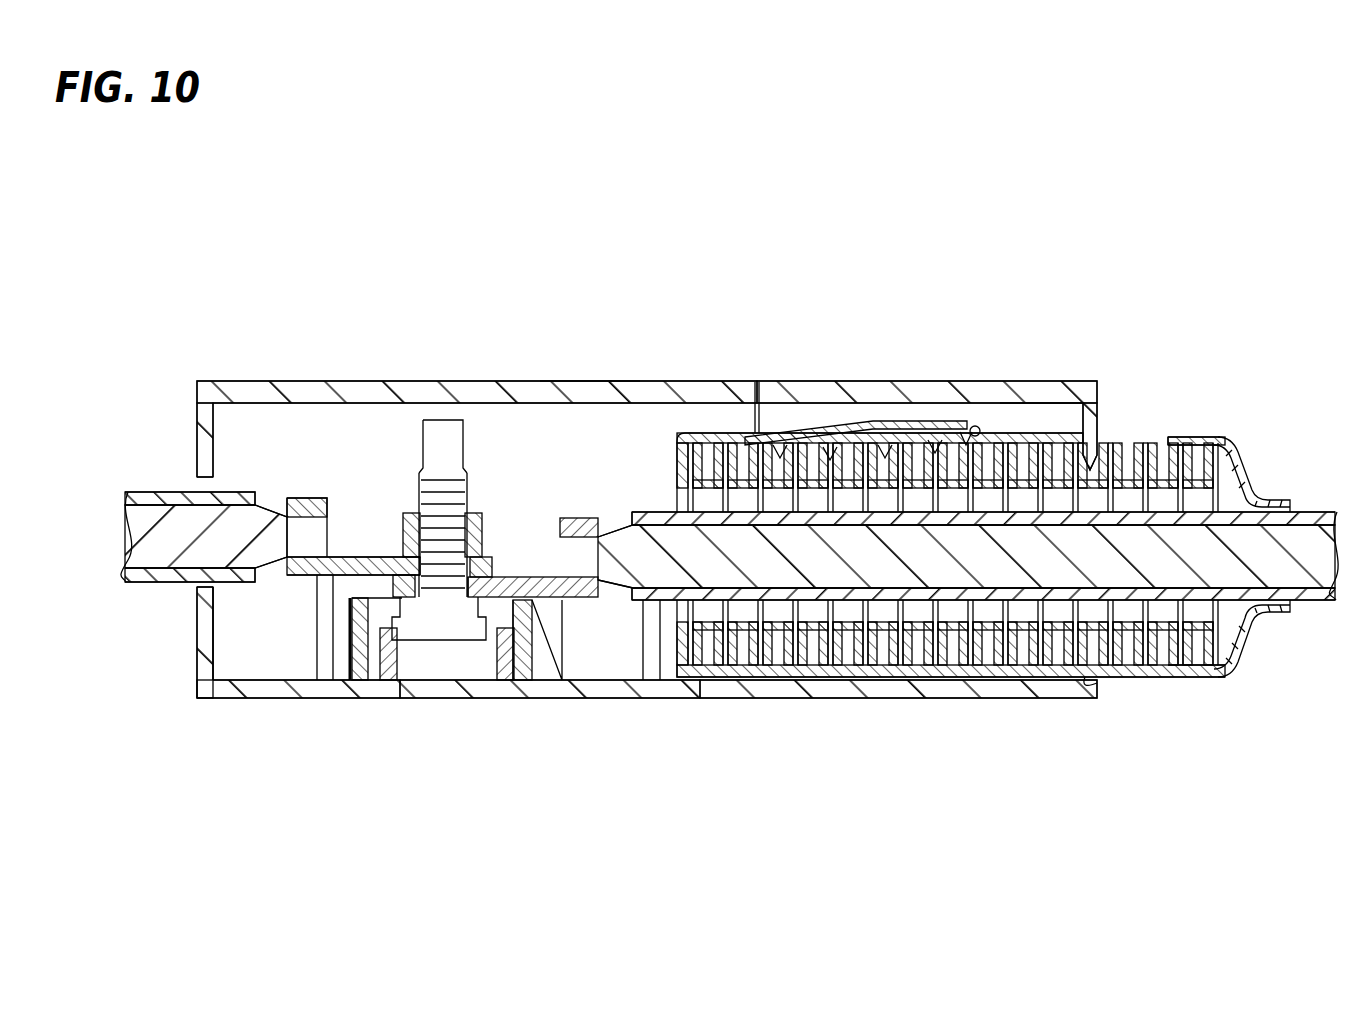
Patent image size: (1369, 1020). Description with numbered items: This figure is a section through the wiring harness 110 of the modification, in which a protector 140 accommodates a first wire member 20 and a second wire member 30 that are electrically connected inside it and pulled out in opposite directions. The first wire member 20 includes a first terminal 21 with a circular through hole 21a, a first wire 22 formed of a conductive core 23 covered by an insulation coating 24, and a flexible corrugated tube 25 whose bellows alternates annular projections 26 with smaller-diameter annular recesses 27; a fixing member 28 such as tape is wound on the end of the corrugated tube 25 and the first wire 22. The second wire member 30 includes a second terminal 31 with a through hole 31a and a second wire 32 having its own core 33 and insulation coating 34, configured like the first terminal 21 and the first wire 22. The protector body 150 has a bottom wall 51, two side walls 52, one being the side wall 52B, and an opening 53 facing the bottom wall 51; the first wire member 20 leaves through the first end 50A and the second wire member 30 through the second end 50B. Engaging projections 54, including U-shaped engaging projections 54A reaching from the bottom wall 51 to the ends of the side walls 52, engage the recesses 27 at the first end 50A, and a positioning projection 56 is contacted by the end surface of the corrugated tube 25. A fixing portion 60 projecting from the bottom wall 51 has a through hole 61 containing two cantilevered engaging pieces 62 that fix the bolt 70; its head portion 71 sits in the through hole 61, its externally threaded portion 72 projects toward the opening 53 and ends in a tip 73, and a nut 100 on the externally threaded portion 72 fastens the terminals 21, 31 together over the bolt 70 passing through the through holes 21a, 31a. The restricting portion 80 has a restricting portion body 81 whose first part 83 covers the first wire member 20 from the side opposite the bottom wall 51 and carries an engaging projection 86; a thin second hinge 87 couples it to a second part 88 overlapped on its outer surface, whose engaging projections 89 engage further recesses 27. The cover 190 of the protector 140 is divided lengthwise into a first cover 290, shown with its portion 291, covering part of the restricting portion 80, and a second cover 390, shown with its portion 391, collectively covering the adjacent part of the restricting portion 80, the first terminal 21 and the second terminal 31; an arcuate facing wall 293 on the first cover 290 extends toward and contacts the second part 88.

The connector assembly 110 is at (1172, 206).
The protector 140 is at (945, 380).
The cover 190 is at (704, 398).
The second cover 390 is at (300, 374).
The top wall of cover 391 is at (584, 380).
The first cover 290 is at (1089, 370).
The cover wall 291 is at (1040, 390).
The facing wall 293 is at (757, 415).
The restricting portion 80 is at (709, 428).
The restricting portion body 81 is at (968, 432).
The first part 83 is at (935, 440).
The engaging projection 86 is at (884, 446).
The second hinge 87 is at (980, 428).
The second part 88 is at (780, 444).
The engaging projections 89 is at (830, 447).
The corrugated tube 25 is at (1150, 440).
The annular projections 26 is at (1108, 446).
The annular recesses 27 is at (1128, 446).
The fixing member 28 is at (1242, 470).
The first wire member 20 is at (969, 590).
The first wire 22 is at (969, 620).
The core 23 is at (1280, 573).
The insulation coating 24 is at (1333, 600).
The second wire member 30 is at (193, 568).
The second wire 32 is at (182, 661).
The core 33 is at (145, 560).
The insulation coating 34 is at (178, 578).
The second terminal 31 is at (307, 498).
The through hole 31a is at (458, 560).
The bolt 70 is at (439, 587).
The head portion 71 is at (418, 640).
The externally threaded portion 72 is at (428, 483).
The tip 73 is at (434, 427).
The nut 100 is at (403, 530).
The first terminal 21 is at (578, 517).
The through hole 21a is at (457, 593).
The through hole 61 is at (530, 577).
The fixing portion 60 is at (353, 640).
The engaging pieces 62 is at (385, 698).
The positioning projection 56 is at (662, 663).
The opening 53 is at (213, 612).
The first end 50A is at (1040, 700).
The second end 50B is at (222, 698).
The bottom wall 51 is at (633, 698).
The side walls 52 is at (298, 743).
The side wall 52B is at (283, 692).
The engaging projections 54 is at (1058, 688).
The engaging projections 54A is at (1100, 684).
The protector body 150 is at (952, 682).